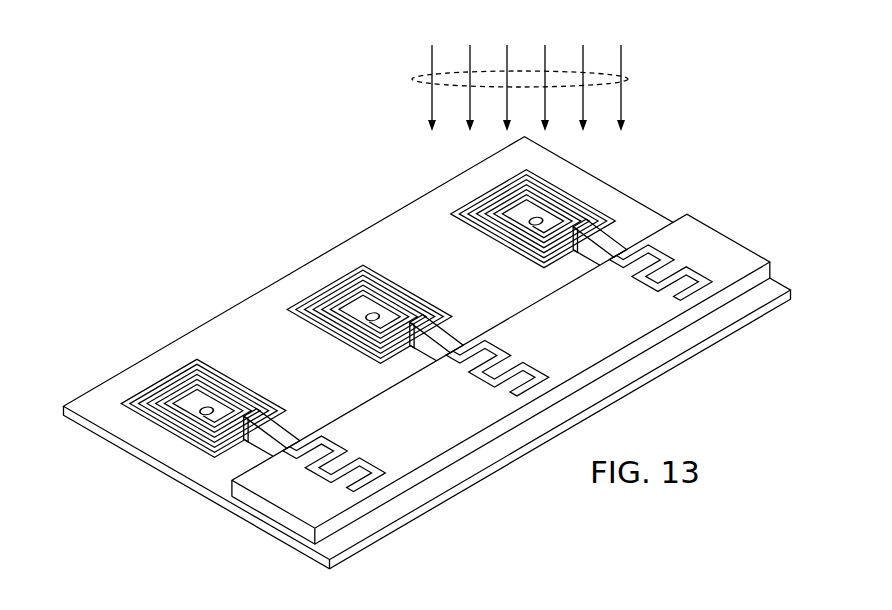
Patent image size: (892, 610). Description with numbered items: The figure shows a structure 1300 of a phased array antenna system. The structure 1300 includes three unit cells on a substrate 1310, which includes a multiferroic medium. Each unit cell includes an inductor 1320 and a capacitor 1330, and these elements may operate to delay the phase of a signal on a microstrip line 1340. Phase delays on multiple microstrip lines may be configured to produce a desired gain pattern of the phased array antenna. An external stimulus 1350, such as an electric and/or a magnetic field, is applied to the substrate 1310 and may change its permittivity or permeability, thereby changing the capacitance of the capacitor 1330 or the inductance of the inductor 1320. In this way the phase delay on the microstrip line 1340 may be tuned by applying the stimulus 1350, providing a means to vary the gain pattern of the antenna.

The structure 1300 is at (270, 163).
The substrate 1310 is at (227, 318).
The inductor 1320 is at (268, 374).
The capacitor 1330 is at (378, 430).
The microstrip line 1340 is at (727, 248).
The external stimulus 1350 is at (642, 80).